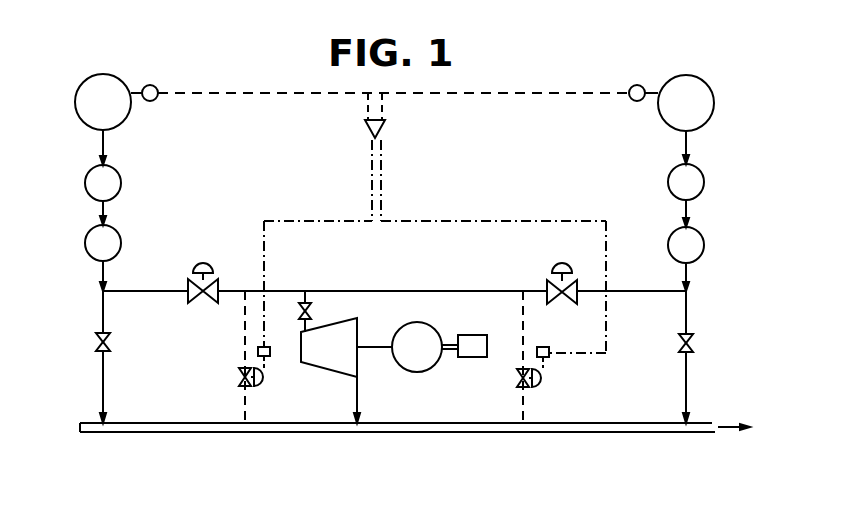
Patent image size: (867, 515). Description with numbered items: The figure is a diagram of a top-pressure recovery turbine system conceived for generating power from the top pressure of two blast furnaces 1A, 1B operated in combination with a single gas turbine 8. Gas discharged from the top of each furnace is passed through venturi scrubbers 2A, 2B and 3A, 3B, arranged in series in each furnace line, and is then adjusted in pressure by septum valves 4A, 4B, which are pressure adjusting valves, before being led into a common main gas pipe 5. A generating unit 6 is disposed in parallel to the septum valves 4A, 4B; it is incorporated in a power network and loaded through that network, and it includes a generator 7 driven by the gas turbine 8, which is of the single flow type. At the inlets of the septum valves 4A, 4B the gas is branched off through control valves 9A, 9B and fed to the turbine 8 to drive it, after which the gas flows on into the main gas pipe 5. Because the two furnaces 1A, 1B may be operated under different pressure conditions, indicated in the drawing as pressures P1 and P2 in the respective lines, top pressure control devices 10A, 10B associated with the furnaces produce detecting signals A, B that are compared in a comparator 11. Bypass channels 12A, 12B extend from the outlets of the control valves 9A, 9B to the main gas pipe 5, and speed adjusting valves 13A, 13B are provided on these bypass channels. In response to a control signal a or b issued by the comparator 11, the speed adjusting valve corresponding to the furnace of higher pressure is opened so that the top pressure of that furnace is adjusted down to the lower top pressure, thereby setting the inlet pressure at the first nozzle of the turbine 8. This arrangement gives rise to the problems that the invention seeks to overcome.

The blast furnace 1A is at (103, 102).
The blast furnace 1B is at (686, 103).
The venturi scrubber 2A is at (103, 183).
The venturi scrubber 2B is at (686, 182).
The venturi scrubber 3A is at (103, 243).
The venturi scrubber 3B is at (686, 245).
The septum valve 4A is at (110, 346).
The septum valve 4B is at (694, 341).
The main gas pipe 5 is at (491, 433).
The generating unit 6 is at (394, 374).
The generator 7 is at (420, 356).
The gas turbine 8 is at (325, 348).
The control valve 9A is at (206, 262).
The control valve 9B is at (569, 262).
The top pressure control device 10A is at (152, 85).
The top pressure control device 10B is at (634, 85).
The comparator 11 is at (383, 124).
The bypass channel 12A is at (245, 340).
The bypass channel 12B is at (525, 330).
The speed adjusting valve 13A is at (263, 382).
The speed adjusting valve 13B is at (541, 376).
The detecting signal A is at (267, 95).
The detecting signal B is at (487, 95).
The control signal a is at (317, 218).
The control signal b is at (474, 218).
The first pressure P1 is at (142, 291).
The second pressure P2 is at (636, 291).